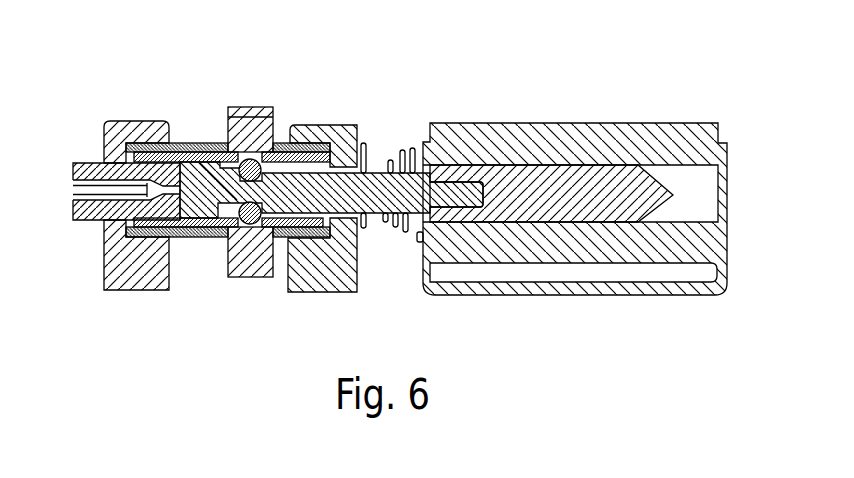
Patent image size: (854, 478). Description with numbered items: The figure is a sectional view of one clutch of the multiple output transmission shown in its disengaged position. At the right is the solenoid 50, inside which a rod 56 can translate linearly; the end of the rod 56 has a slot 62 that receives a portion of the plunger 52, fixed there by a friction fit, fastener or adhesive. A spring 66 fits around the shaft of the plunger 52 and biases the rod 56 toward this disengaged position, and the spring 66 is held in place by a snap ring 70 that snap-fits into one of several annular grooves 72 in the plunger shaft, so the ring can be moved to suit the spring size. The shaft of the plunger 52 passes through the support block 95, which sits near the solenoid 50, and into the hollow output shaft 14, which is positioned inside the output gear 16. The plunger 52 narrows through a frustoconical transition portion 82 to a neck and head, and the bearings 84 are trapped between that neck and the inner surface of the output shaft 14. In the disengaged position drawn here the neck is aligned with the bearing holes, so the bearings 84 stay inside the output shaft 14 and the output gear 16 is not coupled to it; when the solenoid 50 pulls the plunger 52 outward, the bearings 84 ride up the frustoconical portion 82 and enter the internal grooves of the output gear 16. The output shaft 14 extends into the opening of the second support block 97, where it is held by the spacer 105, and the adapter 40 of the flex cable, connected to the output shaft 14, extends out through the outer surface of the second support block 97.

The output shaft 14 is at (198, 208).
The output gear 16 is at (248, 147).
The adapter 40 is at (78, 182).
The solenoid 50 is at (657, 130).
The plunger 52 is at (218, 203).
The rod 56 is at (548, 182).
The slot 62 is at (459, 173).
The spring 66 is at (402, 155).
The snap ring 70 is at (363, 143).
The annular grooves 72 is at (375, 213).
The frustoconical transition portion 82 is at (223, 163).
The bearings 84 is at (252, 160).
The support block 95 is at (307, 125).
The second support block 97 is at (112, 277).
The spacer 105 is at (142, 148).